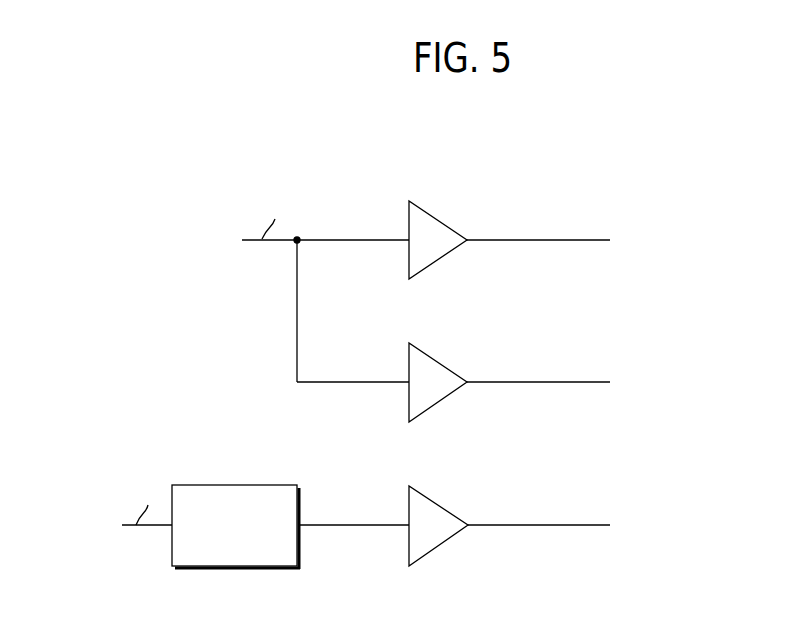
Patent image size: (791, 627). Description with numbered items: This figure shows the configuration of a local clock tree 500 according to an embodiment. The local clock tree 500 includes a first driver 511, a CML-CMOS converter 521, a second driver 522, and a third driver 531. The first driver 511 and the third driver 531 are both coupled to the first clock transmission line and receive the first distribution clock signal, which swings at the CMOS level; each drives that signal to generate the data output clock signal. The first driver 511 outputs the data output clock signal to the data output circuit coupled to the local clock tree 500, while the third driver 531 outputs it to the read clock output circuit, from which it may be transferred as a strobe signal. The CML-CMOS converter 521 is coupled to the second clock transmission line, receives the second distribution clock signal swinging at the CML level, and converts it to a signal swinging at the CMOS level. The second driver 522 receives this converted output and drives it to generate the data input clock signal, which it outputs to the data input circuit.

The local clock tree 500 is at (178, 159).
The third driver 531 is at (423, 204).
The first driver 511 is at (423, 346).
The CML-CMOS converter 521 is at (262, 485).
The second driver 522 is at (423, 490).